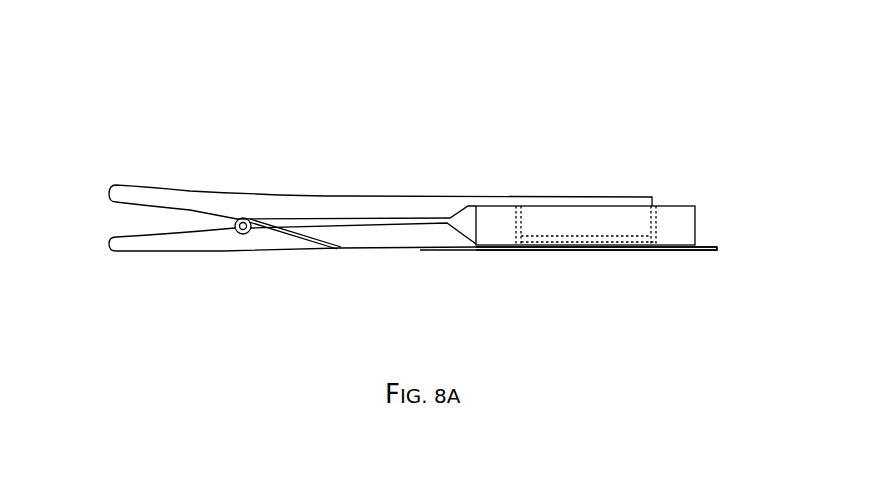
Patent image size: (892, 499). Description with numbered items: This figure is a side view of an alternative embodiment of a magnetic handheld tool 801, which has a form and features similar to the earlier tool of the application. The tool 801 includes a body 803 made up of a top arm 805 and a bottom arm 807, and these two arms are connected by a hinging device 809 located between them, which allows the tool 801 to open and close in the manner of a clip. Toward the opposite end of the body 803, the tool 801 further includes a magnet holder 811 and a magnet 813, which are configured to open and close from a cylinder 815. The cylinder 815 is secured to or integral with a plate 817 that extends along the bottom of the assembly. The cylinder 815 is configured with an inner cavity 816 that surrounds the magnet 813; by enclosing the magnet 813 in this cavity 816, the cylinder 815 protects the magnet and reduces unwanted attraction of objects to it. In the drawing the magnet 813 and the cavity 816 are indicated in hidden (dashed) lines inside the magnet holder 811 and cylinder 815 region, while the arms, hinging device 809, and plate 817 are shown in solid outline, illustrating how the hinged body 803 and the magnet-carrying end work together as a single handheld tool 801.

The magnetic handheld tool 801 is at (130, 58).
The body 803 is at (240, 167).
The top arm 805 is at (371, 197).
The bottom arm 807 is at (410, 248).
The hinging device 809 is at (287, 237).
The magnet holder 811 is at (656, 216).
The magnet 813 is at (521, 246).
The cylinder 815 is at (672, 206).
The inner cavity 816 is at (656, 236).
The plate 817 is at (645, 247).